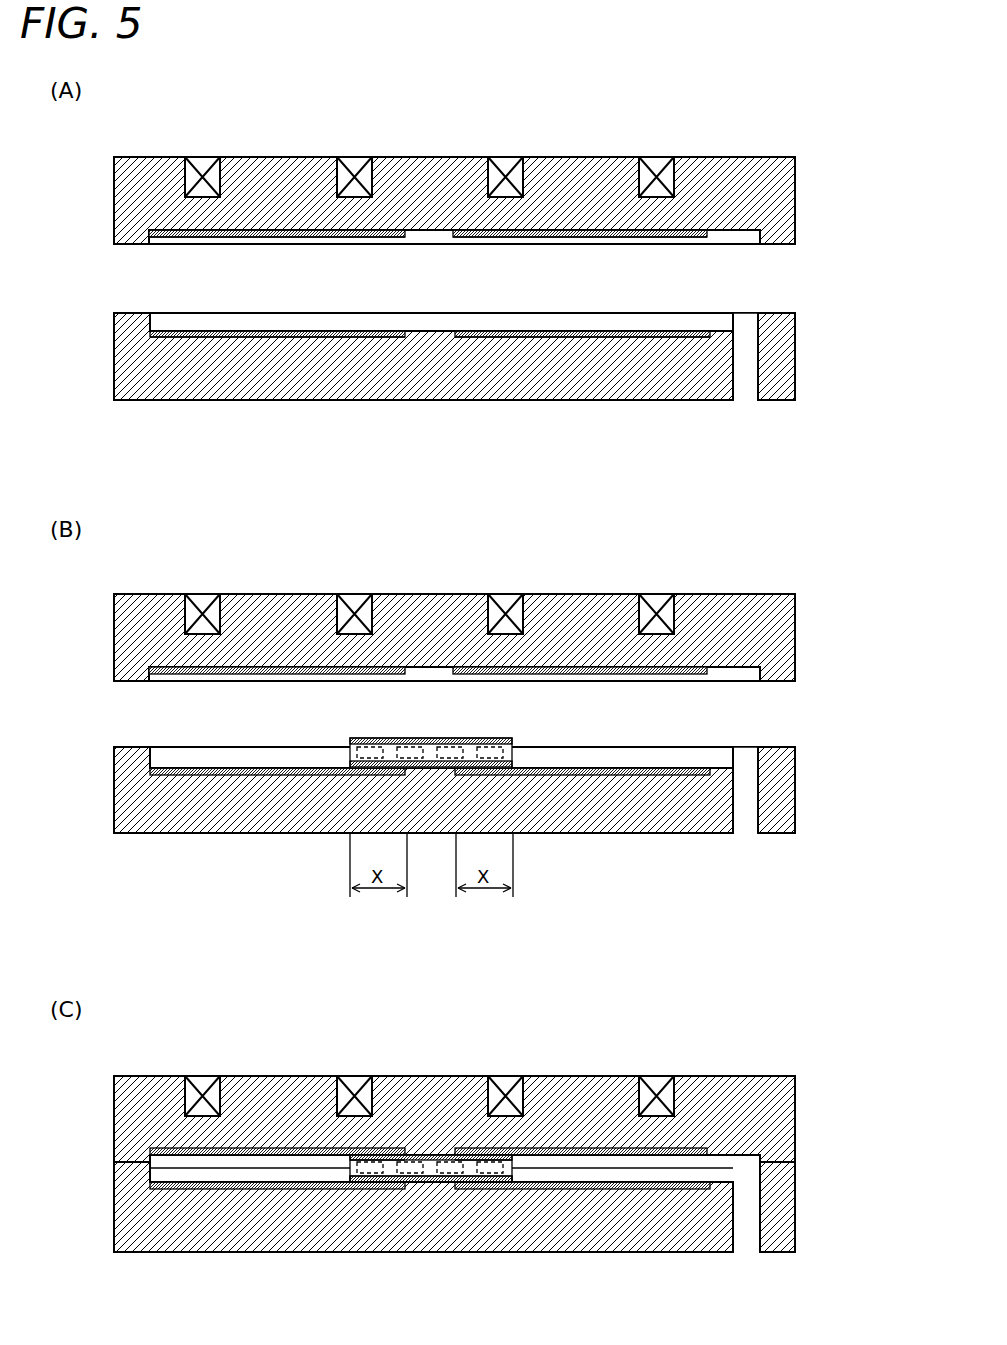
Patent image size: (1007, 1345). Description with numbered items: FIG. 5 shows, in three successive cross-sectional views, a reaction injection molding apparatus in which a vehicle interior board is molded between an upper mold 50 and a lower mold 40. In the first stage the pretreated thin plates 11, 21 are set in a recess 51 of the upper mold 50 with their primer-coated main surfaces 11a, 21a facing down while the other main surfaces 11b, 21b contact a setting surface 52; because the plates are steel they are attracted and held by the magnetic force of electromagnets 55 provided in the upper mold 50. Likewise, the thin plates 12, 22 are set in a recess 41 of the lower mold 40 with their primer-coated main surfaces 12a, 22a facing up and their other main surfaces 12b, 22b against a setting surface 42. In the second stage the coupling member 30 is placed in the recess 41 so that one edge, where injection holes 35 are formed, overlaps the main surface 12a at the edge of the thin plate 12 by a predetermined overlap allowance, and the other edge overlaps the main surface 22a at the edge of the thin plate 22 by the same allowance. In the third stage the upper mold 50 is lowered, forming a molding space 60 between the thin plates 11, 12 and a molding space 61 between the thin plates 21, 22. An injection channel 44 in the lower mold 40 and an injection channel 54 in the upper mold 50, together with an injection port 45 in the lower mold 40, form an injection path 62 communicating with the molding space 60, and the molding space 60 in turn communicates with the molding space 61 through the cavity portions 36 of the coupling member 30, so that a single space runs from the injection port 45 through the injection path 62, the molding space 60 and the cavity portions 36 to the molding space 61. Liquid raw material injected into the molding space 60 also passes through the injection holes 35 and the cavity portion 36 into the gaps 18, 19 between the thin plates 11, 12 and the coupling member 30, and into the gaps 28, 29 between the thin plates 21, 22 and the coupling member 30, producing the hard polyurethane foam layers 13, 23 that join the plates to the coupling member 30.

The thin plate 11 is at (565, 230).
The main surface 11a is at (538, 244).
The main surface 11b is at (620, 230).
The thin plate 12 is at (647, 337).
The main surface 12a is at (640, 331).
The main surface 12b is at (590, 337).
The hard polyurethane foam layer 13 is at (572, 1150).
The gap 18 is at (465, 1165).
The gap 19 is at (530, 1189).
The thin plate 21 is at (276, 230).
The main surface 21a is at (205, 245).
The main surface 21b is at (324, 230).
The thin plate 22 is at (332, 337).
The main surface 22a is at (265, 331).
The main surface 22b is at (265, 337).
The hard polyurethane foam layer 23 is at (250, 1168).
The gap 28 is at (375, 1160).
The gap 29 is at (385, 1182).
The coupling member 30 is at (426, 991).
The injection hole 35 is at (392, 740).
The cavity portion 36 is at (470, 1189).
The lower mold 40 is at (795, 358).
The recess 41 is at (412, 318).
The setting surface 42 is at (530, 320).
The injection channel 44 is at (735, 312).
The injection port 45 is at (748, 370).
The upper mold 50 is at (795, 185).
The recess 51 is at (427, 244).
The setting surface 52 is at (595, 244).
The injection channel 54 is at (733, 244).
The electromagnet 55 is at (199, 157).
The molding space 60 is at (700, 1165).
The molding space 61 is at (305, 1168).
The injection path 62 is at (745, 1165).